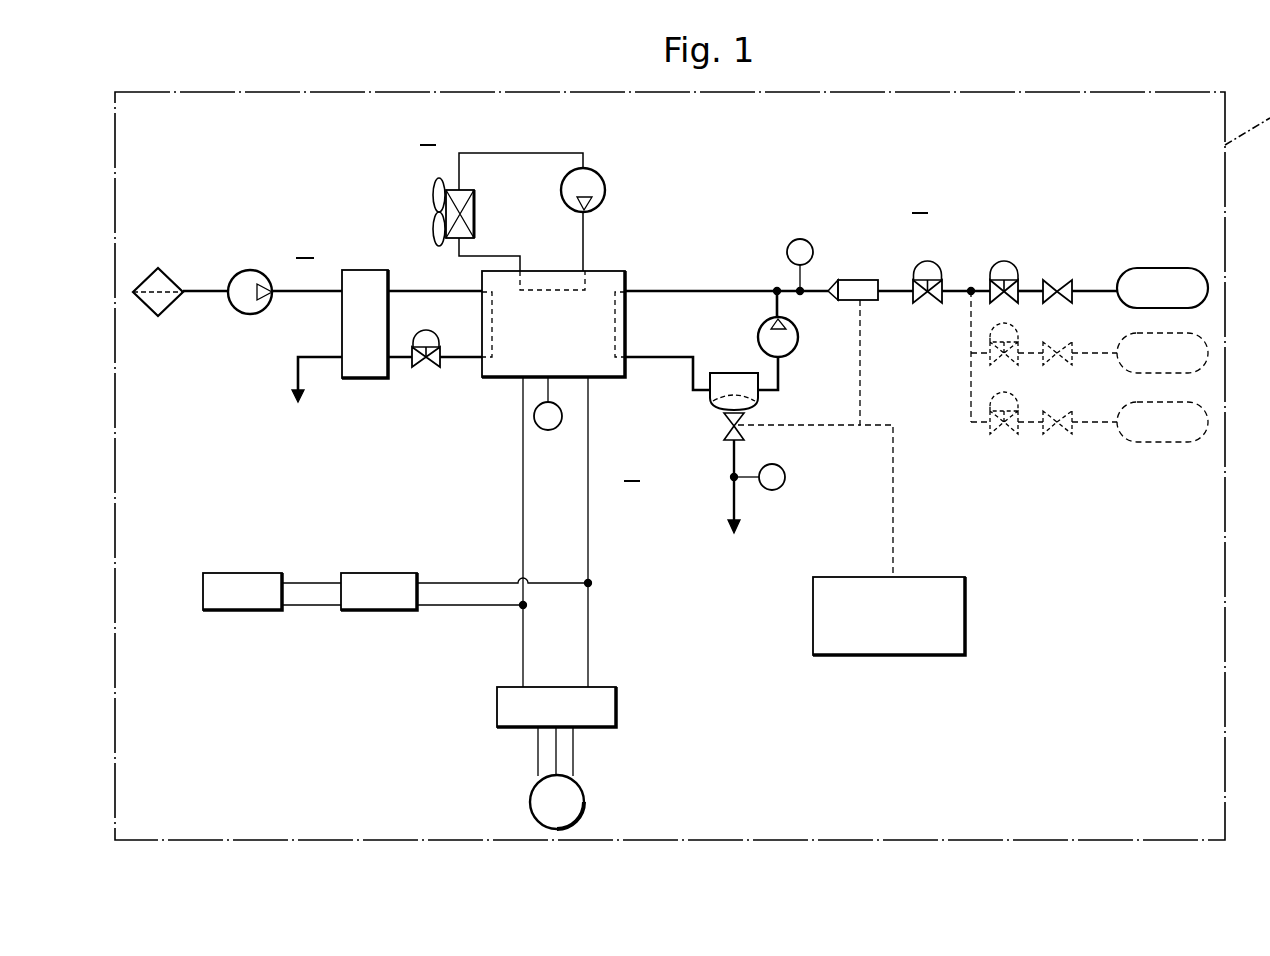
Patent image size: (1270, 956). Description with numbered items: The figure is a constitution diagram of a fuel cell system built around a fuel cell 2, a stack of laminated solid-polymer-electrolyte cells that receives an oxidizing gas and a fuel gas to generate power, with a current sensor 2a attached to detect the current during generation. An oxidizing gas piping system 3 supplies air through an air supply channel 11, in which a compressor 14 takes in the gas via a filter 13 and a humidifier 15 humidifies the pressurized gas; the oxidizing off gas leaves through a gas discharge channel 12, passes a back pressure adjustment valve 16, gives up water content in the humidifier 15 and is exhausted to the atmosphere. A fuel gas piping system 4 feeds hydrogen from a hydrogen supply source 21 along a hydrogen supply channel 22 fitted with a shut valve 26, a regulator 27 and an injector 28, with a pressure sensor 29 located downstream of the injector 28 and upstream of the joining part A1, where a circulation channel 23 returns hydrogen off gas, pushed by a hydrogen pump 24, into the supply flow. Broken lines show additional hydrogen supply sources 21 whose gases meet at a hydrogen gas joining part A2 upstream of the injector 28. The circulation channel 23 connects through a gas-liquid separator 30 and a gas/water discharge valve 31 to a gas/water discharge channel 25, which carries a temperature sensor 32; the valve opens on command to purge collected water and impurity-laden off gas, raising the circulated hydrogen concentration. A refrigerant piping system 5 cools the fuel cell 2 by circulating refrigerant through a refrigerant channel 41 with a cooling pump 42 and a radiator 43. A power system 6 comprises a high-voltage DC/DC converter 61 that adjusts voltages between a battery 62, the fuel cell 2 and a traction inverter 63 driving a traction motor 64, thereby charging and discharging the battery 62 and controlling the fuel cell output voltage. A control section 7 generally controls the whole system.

The fuel cell 2 is at (500, 380).
The current sensor 2a is at (548, 431).
The oxidizing gas piping system 3 is at (305, 249).
The fuel gas piping system 4 is at (920, 204).
The refrigerant piping system 5 is at (428, 136).
The power system 6 is at (632, 472).
The control section 7 is at (920, 577).
The air supply channel 11 is at (400, 290).
The gas discharge channel 12 is at (304, 368).
The filter 13 is at (166, 272).
The compressor 14 is at (249, 270).
The humidifier 15 is at (365, 270).
The back pressure adjustment valve 16 is at (436, 332).
The hydrogen supply source 21 is at (1154, 268).
The hydrogen supply channel 22 is at (700, 290).
The circulation channel 23 is at (640, 360).
The hydrogen pump 24 is at (798, 347).
The gas/water discharge channel 25 is at (732, 496).
The shut valve 26 is at (1060, 280).
The regulator 27 is at (930, 262).
The injector 28 is at (858, 280).
The pressure sensor 29 is at (802, 239).
The gas-liquid separator 30 is at (733, 373).
The gas/water discharge valve 31 is at (724, 428).
The temperature sensor 32 is at (779, 491).
The refrigerant channel 41 is at (559, 153).
The cooling pump 42 is at (603, 180).
The radiator 43 is at (433, 195).
The high-voltage DC/DC converter 61 is at (380, 573).
The battery 62 is at (250, 573).
The traction inverter 63 is at (618, 710).
The traction motor 64 is at (585, 800).
The joining part A1 is at (777, 288).
The hydrogen gas joining part A2 is at (971, 288).